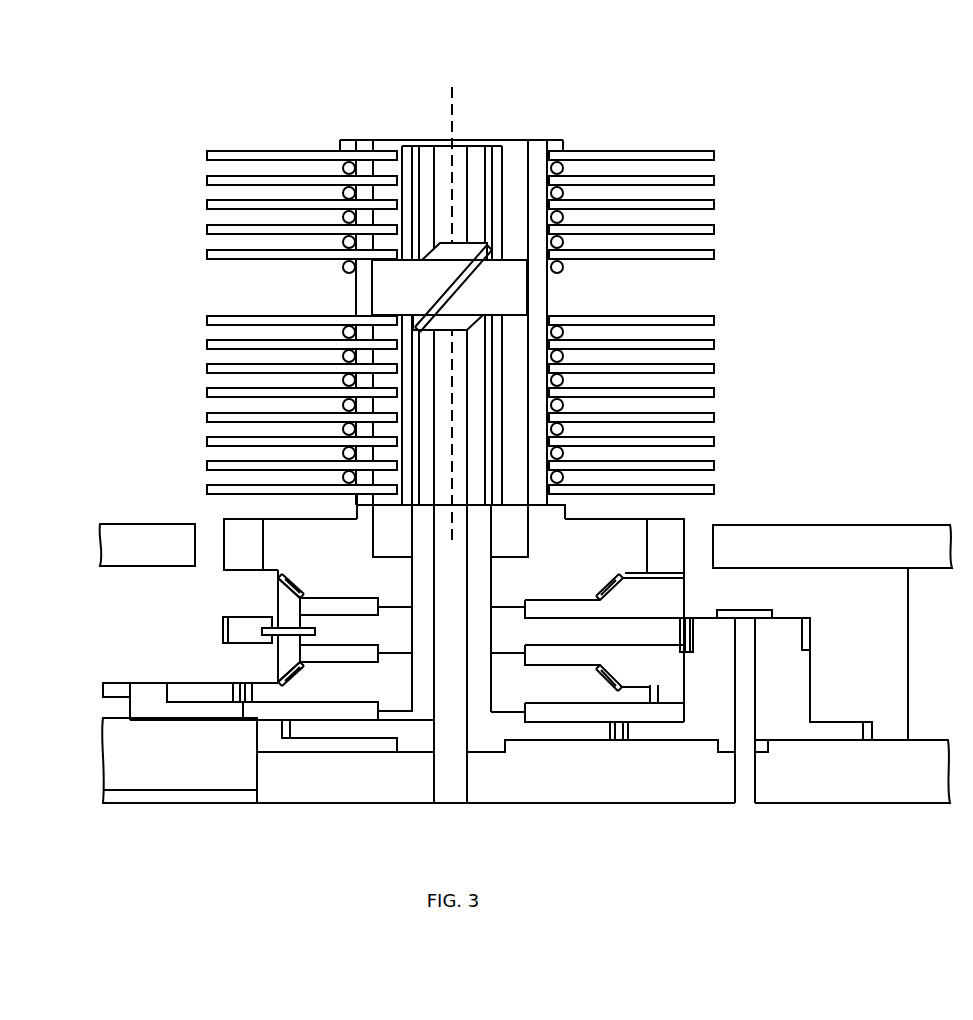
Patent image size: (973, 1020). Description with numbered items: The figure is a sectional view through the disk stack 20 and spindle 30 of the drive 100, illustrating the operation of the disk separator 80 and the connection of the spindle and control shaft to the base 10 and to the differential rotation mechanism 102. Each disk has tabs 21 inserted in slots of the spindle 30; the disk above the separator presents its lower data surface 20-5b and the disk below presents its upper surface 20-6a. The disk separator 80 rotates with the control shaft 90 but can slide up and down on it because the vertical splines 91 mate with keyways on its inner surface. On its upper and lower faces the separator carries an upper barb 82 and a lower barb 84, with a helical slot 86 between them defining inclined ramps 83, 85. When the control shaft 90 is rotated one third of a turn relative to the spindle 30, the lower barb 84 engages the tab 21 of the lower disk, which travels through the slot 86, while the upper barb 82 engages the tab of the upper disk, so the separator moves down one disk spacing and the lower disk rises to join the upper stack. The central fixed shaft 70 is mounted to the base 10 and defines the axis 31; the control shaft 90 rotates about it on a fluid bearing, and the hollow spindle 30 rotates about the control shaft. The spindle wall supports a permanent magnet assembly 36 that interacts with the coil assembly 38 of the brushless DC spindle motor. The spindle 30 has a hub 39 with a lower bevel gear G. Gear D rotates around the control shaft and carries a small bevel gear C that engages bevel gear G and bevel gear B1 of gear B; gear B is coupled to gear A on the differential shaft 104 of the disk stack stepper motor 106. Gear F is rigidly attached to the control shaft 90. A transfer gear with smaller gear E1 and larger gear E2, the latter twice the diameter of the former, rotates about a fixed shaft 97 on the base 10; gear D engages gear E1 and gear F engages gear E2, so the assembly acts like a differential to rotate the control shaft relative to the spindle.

The drive 100 is at (438, 45).
The base 10 is at (598, 797).
The disk stack 20 is at (195, 153).
The lower data surface 20-5b is at (293, 263).
The upper surface 20-6a is at (244, 317).
The tabs 21 is at (367, 321).
The spindle 30 is at (512, 148).
The axis 31 is at (454, 110).
The permanent magnet assembly 36 is at (674, 530).
The coil assembly 38 is at (843, 538).
The hub 39 is at (593, 530).
The fixed shaft 70 is at (455, 798).
The disk separator 80 is at (513, 288).
The upper barb 82 is at (472, 243).
The ramp 83 is at (478, 258).
The lower barb 84 is at (458, 332).
The ramp 85 is at (424, 320).
The slot 86 is at (502, 253).
The control shaft 90 is at (422, 540).
The vertical splines 91 is at (489, 150).
The fixed shaft 97 is at (745, 797).
The differential rotation mechanism 102 is at (197, 572).
The differential shaft 104 is at (147, 692).
The disk stack stepper motor 106 is at (118, 756).
The gear A is at (236, 684).
The gear B is at (657, 695).
The bevel gear B1 is at (613, 672).
The bevel gear C is at (281, 663).
The gear D is at (681, 620).
The gear E1 is at (693, 637).
The gear E2 is at (626, 742).
The gear F is at (613, 722).
The bevel gear G is at (606, 593).